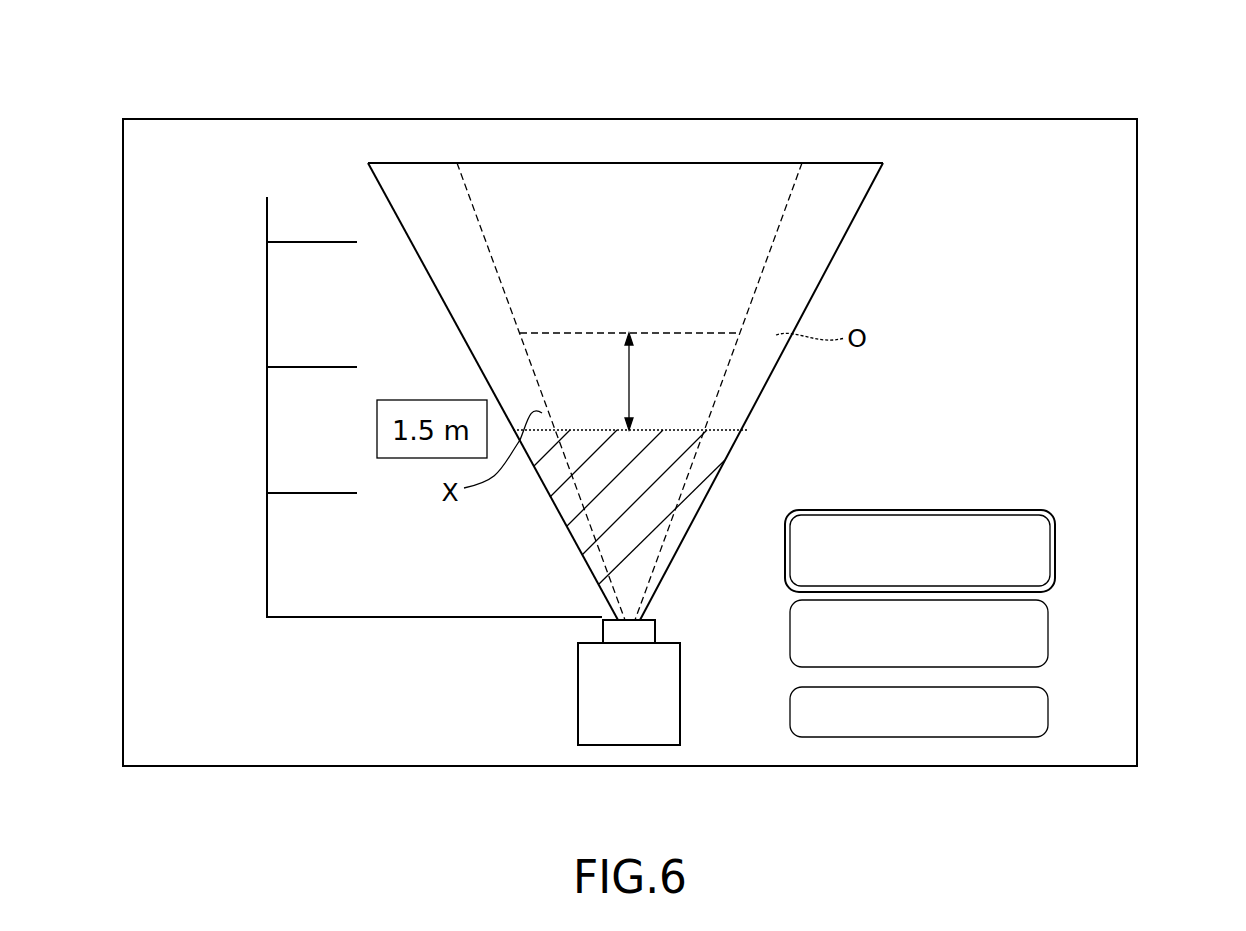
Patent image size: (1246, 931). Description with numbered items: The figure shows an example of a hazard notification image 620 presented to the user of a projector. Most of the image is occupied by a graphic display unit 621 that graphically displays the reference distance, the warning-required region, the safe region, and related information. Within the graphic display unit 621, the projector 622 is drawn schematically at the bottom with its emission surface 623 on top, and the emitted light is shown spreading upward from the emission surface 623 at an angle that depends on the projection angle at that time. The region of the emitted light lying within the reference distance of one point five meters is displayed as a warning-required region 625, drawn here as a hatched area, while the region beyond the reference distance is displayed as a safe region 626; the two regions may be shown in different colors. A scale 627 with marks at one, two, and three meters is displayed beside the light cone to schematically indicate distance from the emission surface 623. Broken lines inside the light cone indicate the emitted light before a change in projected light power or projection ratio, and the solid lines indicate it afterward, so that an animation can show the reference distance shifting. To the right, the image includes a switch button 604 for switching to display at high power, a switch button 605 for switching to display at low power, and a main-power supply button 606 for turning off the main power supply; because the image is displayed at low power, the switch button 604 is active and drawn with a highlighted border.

The hazard notification image 620 is at (632, 119).
The graphic display unit 621 is at (492, 140).
The projector 622 is at (628, 728).
The emission surface 623 is at (655, 614).
The warning-required region 625 is at (705, 467).
The safe region 626 is at (800, 272).
The scale 627 is at (265, 585).
The switch button 604 is at (1057, 545).
The switch button 605 is at (1050, 628).
The main-power supply button 606 is at (1050, 710).